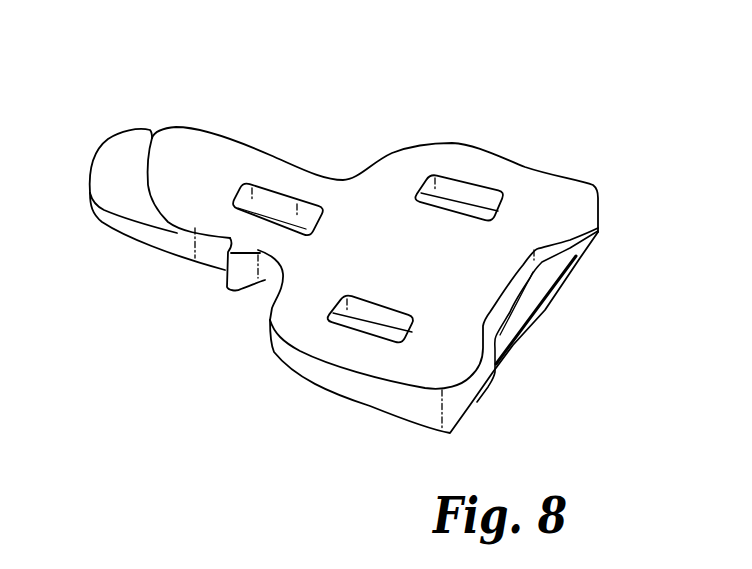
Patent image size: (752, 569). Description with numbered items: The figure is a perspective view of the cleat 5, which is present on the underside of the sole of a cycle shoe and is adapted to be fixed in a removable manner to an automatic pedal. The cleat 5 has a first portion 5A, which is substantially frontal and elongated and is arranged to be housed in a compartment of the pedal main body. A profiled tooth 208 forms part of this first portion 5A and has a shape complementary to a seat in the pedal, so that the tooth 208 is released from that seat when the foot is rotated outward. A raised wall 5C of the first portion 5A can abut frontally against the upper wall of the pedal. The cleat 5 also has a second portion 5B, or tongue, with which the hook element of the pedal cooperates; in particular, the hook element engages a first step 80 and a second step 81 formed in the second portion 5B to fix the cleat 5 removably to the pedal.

The cleat 5 is at (440, 157).
The first portion of the cleat 5A is at (245, 265).
The second portion of the cleat 5B is at (113, 168).
The raised wall 5C is at (152, 145).
The tooth 208 is at (238, 248).
The first step 80 is at (529, 288).
The second step 81 is at (531, 317).